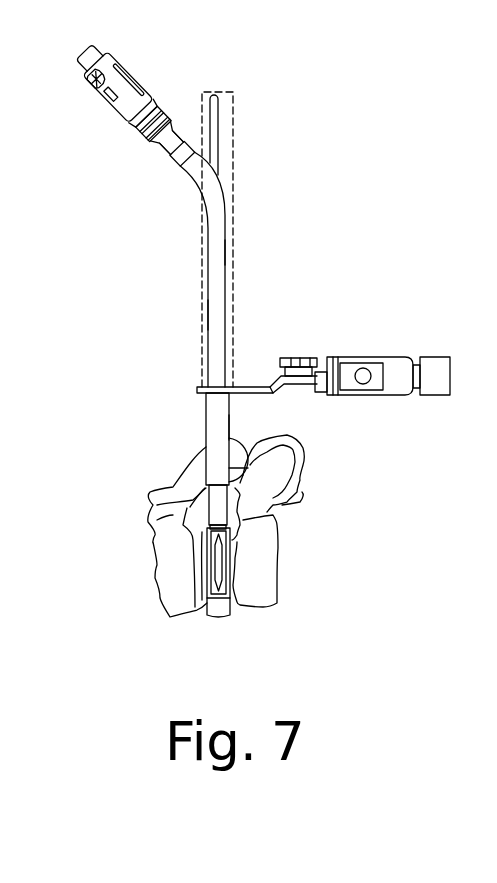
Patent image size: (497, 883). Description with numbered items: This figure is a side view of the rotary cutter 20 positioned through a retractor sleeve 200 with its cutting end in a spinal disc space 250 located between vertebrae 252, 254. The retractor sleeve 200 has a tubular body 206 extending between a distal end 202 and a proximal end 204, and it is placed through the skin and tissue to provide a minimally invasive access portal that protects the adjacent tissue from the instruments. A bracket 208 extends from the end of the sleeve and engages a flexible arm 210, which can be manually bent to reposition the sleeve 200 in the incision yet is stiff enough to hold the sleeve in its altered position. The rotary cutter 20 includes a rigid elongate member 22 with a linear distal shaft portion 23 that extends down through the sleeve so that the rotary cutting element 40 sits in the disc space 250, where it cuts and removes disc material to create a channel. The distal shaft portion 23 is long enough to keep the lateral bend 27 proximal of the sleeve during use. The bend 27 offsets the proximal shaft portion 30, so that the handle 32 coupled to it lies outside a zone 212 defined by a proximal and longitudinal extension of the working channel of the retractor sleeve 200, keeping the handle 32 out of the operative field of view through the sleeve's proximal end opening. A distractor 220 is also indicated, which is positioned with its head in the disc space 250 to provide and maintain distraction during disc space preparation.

The rotary cutter 20 is at (232, 195).
The rigid elongate member 22 is at (226, 253).
The linear distal shaft portion 23 is at (208, 316).
The lateral bend 27 is at (203, 188).
The proximal shaft portion 30 is at (172, 163).
The handle 32 is at (137, 62).
The rotary cutting element 40 is at (213, 615).
The retractor sleeve 200 is at (196, 437).
The distal end 202 is at (197, 388).
The proximal end 204 is at (243, 434).
The tubular body 206 is at (235, 427).
The bracket 208 is at (256, 380).
The flexible arm 210 is at (358, 357).
The zone 212 is at (233, 92).
The distractor 220 is at (226, 133).
The spinal disc space 250 is at (229, 618).
The vertebra 252 is at (150, 575).
The vertebra 254 is at (278, 582).